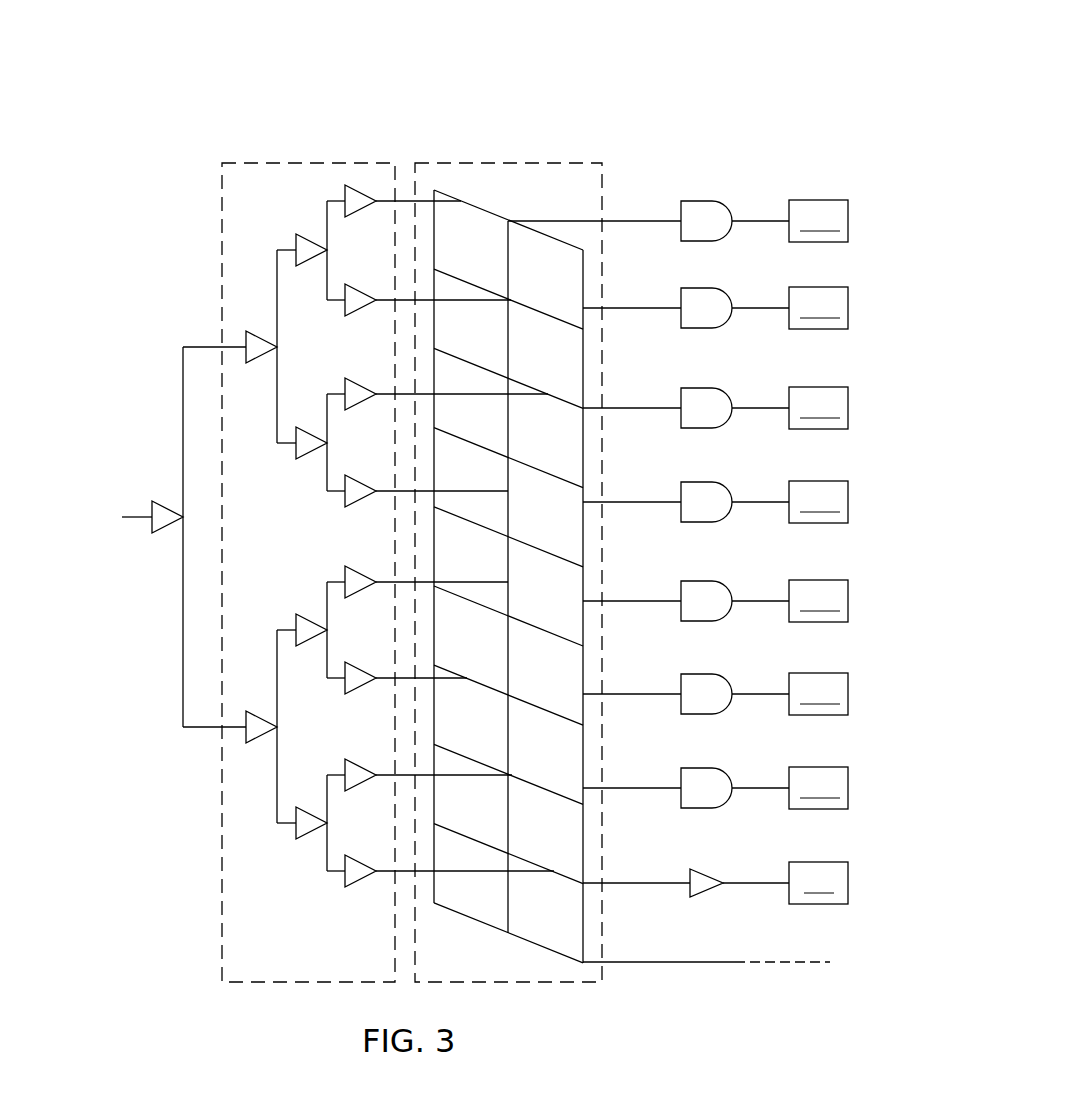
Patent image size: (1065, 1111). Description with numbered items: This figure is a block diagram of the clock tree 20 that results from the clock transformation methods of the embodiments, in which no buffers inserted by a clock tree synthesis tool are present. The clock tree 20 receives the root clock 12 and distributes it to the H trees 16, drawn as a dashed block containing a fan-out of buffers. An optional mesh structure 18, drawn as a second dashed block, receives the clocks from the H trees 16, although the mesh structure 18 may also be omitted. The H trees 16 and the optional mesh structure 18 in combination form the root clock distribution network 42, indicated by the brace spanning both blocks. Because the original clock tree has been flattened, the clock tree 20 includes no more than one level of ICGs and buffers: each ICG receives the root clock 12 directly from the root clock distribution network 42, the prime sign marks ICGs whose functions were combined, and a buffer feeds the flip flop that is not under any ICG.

The root clock 12 is at (137, 511).
The H trees 16 is at (271, 156).
The mesh structure 18 is at (546, 156).
The clock tree 20 is at (719, 64).
The root clock distribution network 42 is at (605, 97).